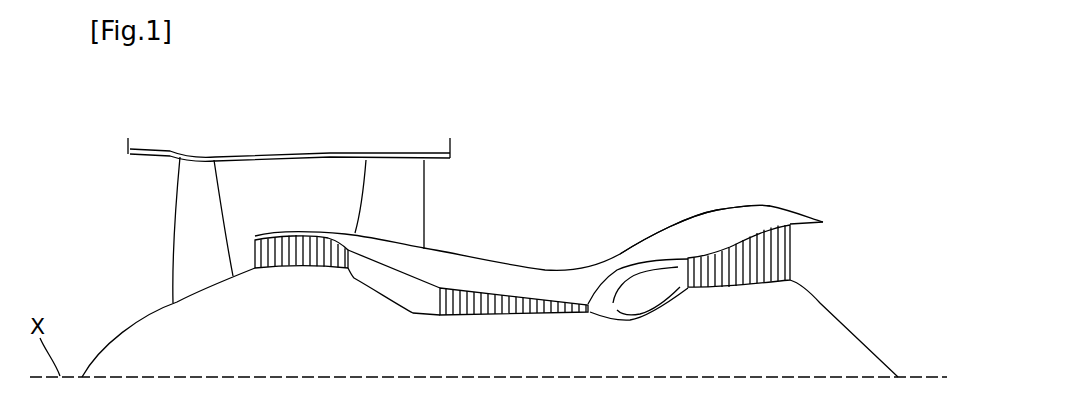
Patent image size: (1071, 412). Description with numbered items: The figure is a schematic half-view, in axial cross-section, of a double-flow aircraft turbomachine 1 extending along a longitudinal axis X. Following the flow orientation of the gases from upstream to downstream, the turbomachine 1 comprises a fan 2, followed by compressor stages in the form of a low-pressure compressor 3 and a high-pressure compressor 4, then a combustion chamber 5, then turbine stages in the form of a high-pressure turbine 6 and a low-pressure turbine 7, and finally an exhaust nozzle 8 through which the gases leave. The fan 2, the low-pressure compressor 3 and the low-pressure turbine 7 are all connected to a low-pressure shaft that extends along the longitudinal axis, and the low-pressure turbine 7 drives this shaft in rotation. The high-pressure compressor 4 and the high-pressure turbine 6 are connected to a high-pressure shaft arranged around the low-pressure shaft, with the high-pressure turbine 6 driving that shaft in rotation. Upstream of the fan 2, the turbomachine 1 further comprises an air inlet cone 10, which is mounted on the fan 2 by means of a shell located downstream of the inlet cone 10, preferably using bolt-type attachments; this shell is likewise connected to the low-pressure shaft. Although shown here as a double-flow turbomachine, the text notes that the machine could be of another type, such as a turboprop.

The turbomachine 1 is at (580, 101).
The fan 2 is at (180, 230).
The low-pressure compressor 3 is at (280, 209).
The high-pressure compressor 4 is at (506, 280).
The combustion chamber 5 is at (645, 290).
The high-pressure turbine 6 is at (725, 225).
The low-pressure turbine 7 is at (747, 190).
The exhaust nozzle 8 is at (823, 222).
The air inlet cone 10 is at (96, 358).